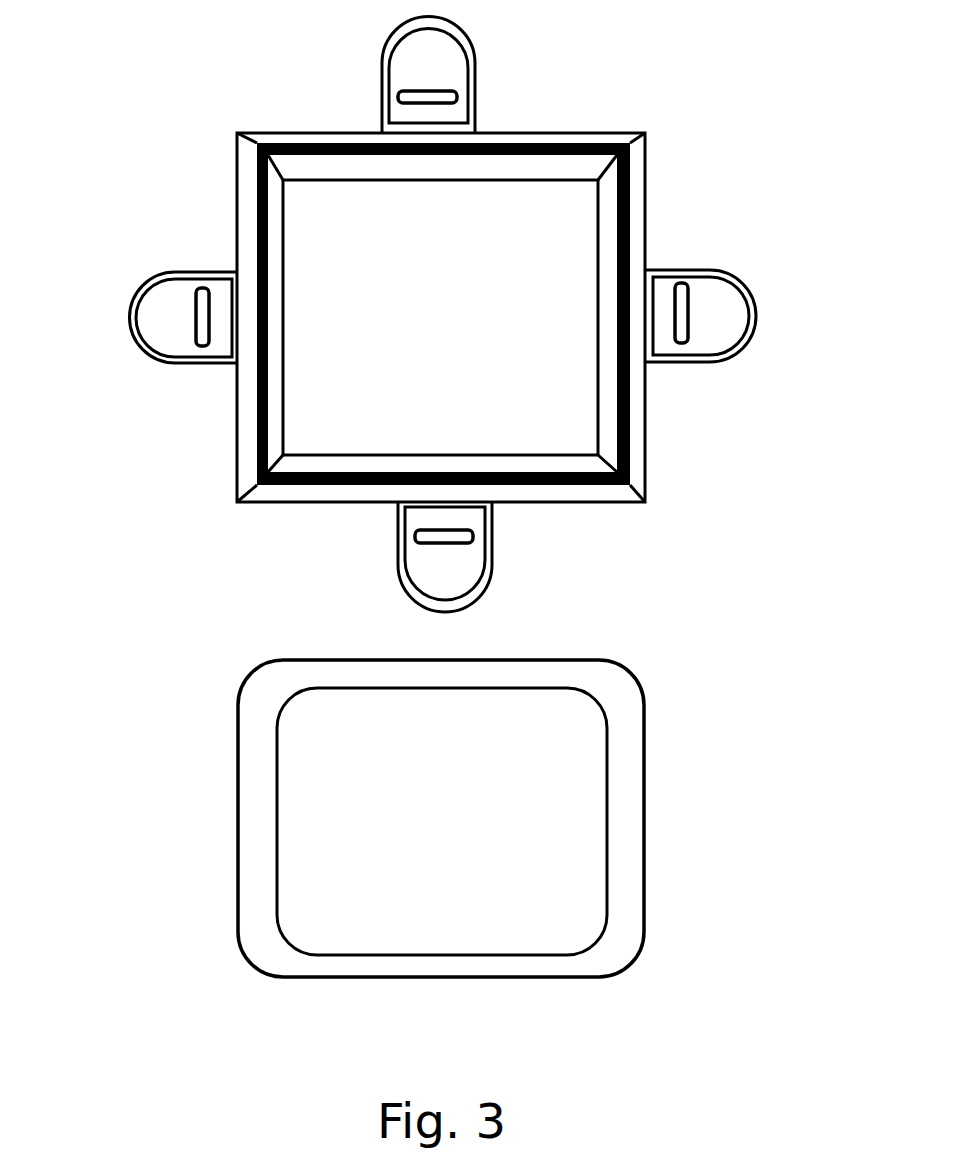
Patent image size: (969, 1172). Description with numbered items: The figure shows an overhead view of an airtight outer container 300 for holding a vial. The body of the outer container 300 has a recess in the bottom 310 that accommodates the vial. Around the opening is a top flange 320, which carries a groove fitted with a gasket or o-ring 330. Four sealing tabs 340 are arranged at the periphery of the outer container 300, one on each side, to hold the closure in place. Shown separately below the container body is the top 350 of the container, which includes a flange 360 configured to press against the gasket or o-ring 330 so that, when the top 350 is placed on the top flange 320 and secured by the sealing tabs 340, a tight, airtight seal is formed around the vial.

The outer container 300 is at (90, 85).
The recess in the bottom 310 is at (522, 232).
The top flange 320 is at (646, 210).
The gasket or o-ring 330 is at (630, 395).
The sealing tabs 340 is at (503, 537).
The top 350 is at (540, 797).
The flange 360 is at (617, 708).